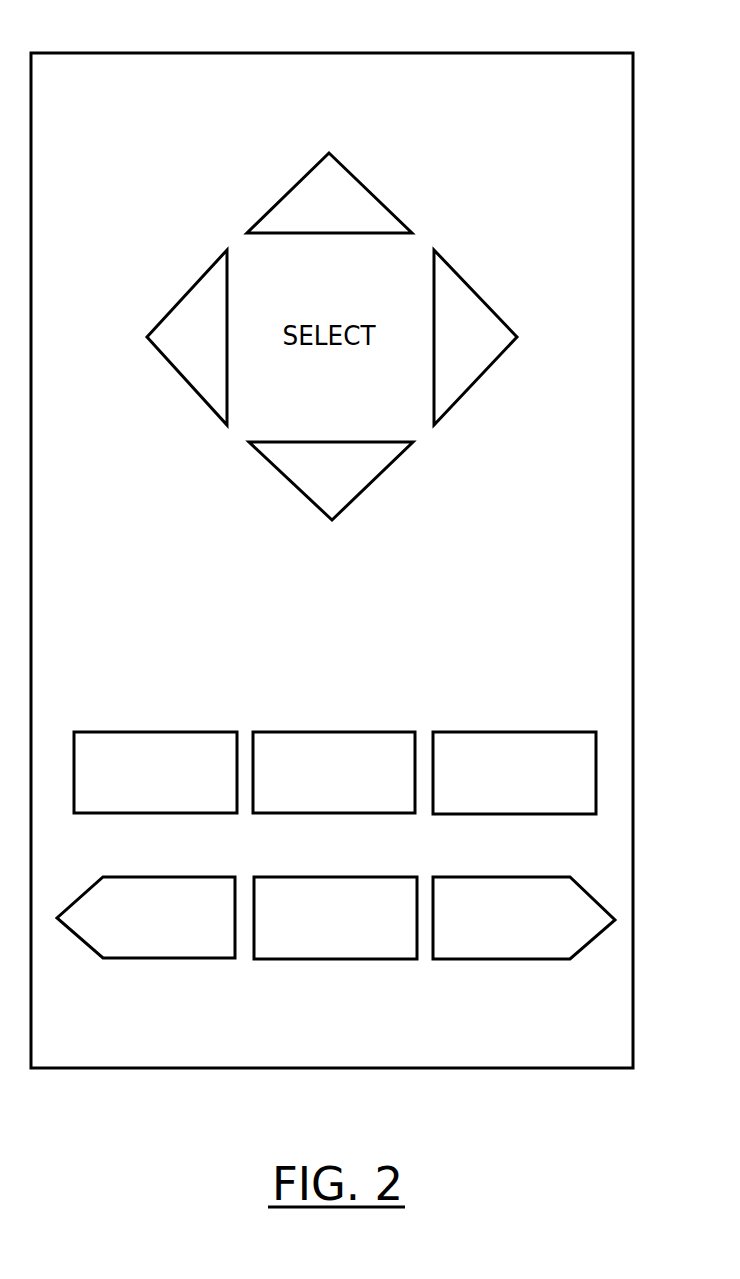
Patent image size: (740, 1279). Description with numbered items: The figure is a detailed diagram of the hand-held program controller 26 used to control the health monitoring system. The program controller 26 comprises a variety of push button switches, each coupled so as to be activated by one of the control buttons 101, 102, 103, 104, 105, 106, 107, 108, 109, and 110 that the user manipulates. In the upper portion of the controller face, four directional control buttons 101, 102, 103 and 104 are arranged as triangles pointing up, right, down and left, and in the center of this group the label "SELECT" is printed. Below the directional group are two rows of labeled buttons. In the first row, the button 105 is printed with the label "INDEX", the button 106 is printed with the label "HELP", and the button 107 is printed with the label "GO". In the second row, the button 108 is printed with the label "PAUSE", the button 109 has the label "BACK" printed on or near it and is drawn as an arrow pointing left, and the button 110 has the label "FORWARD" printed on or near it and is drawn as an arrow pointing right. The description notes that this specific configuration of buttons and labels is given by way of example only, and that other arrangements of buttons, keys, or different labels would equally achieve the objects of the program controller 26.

The hand-held program controller 26 is at (130, 53).
The directional control button 101 is at (297, 183).
The directional control button 102 is at (463, 283).
The directional control button 103 is at (383, 470).
The directional control button 104 is at (198, 283).
The control button 105 is at (133, 732).
The control button 106 is at (313, 732).
The control button 107 is at (492, 732).
The control button 108 is at (313, 877).
The control button 109 is at (135, 877).
The control button 110 is at (493, 877).